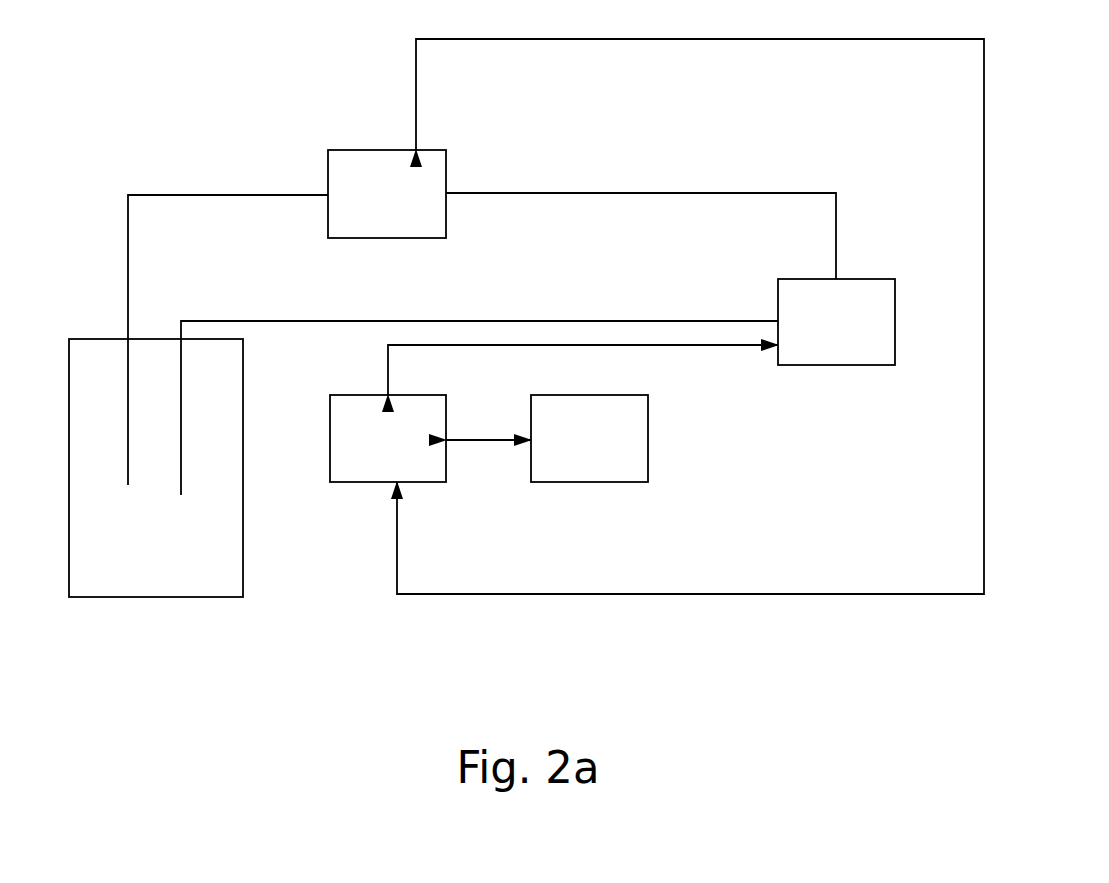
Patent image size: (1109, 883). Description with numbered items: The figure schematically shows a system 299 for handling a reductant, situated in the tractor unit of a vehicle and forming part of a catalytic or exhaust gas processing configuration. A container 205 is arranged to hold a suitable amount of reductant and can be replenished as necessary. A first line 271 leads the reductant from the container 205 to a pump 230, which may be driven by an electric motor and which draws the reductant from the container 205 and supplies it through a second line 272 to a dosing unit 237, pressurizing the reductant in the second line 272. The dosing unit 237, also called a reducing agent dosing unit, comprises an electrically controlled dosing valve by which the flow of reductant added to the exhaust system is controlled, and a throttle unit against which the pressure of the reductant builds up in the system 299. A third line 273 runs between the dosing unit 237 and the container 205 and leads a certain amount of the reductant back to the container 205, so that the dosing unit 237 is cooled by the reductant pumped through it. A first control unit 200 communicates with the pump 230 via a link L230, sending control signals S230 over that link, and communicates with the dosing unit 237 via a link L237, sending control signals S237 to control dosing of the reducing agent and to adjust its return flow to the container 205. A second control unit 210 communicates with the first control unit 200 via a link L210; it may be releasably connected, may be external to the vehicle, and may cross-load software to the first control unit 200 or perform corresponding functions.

The system 299 is at (322, 90).
The container 205 is at (96, 597).
The pump 230 is at (387, 194).
The dosing unit 237 is at (836, 322).
The first control unit 200 is at (388, 438).
The second control unit 210 is at (589, 438).
The first line 271 is at (183, 195).
The second line 272 is at (587, 193).
The third line 273 is at (622, 321).
The control signals S237 is at (583, 370).
The link L237 is at (688, 345).
The link L210 is at (487, 440).
The control signals S230 is at (690, 337).
The link L230 is at (692, 594).